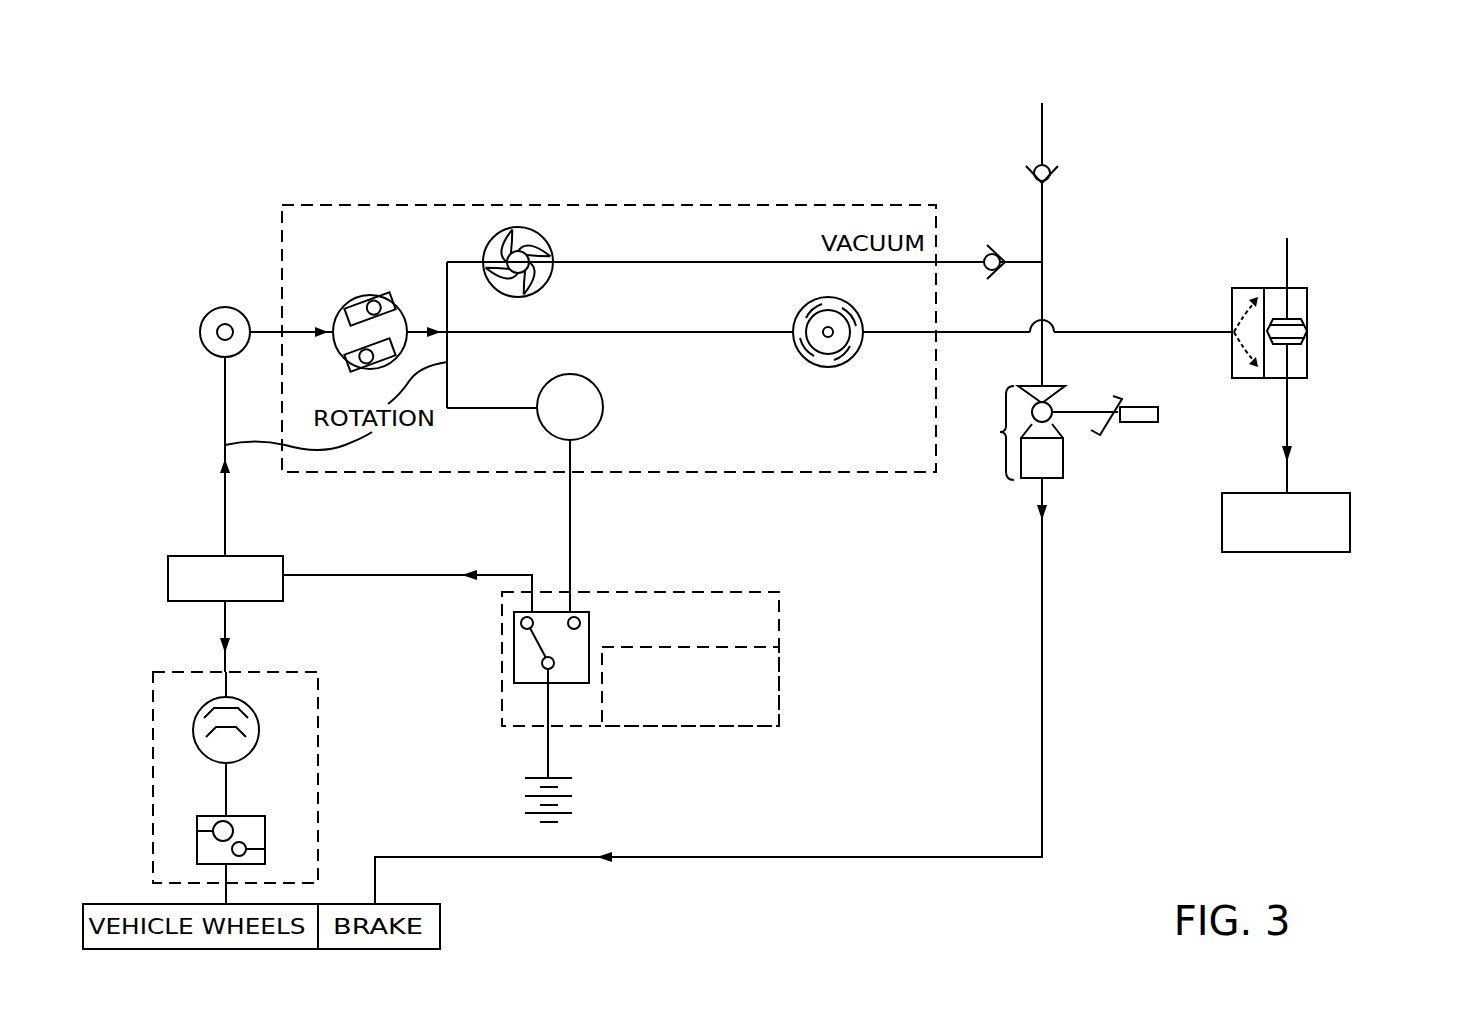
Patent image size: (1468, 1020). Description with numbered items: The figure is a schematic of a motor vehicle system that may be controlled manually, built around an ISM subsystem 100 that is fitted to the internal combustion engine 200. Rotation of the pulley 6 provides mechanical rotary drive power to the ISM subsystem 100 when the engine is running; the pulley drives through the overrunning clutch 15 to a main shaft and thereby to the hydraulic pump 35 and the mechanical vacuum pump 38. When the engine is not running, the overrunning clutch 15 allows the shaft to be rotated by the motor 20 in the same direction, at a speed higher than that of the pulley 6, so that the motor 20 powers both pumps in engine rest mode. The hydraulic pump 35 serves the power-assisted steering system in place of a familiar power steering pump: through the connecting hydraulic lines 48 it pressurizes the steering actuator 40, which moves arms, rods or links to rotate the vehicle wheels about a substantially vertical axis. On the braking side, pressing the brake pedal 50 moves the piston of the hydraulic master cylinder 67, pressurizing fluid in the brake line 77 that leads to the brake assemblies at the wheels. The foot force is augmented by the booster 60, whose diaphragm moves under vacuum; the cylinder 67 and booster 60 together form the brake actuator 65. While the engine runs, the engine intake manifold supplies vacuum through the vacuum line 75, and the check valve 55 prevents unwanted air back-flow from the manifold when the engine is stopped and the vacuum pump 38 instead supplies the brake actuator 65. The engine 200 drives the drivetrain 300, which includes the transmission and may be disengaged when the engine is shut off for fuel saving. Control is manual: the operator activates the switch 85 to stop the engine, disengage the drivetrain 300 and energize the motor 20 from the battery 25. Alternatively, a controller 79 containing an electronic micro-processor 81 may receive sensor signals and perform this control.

The pulley 6 is at (227, 306).
The overrunning clutch 15 is at (378, 296).
The motor 20 is at (603, 391).
The battery 25 is at (570, 812).
The hydraulic pump 35 is at (855, 308).
The mechanical vacuum pump 38 is at (550, 250).
The steering actuator 40 is at (1300, 287).
The hydraulic lines 48 is at (1167, 330).
The brake pedal 50 is at (1147, 405).
The check valve 55 is at (1042, 220).
The booster 60 is at (1058, 386).
The brake actuator 65 is at (1037, 436).
The hydraulic master cylinder 67 is at (1066, 478).
The vacuum line 75 is at (688, 262).
The brake line 77 is at (777, 855).
The controller 79 is at (779, 631).
The micro-processor 81 is at (690, 686).
The switch 85 is at (523, 656).
The ISM subsystem 100 is at (377, 170).
The internal combustion engine 200 is at (283, 557).
The drivetrain 300 is at (312, 768).